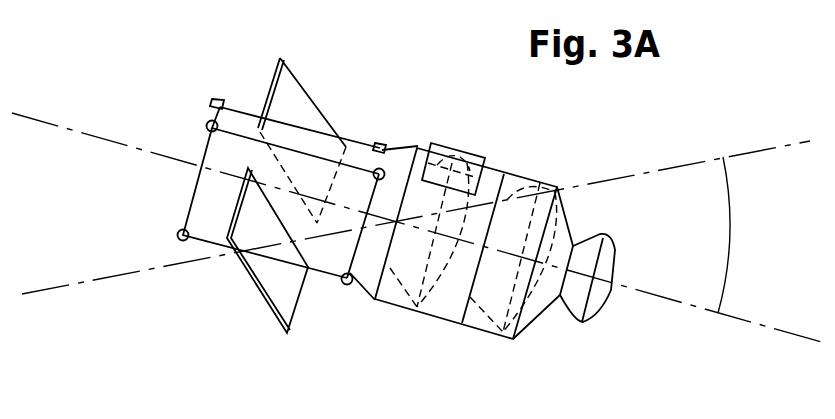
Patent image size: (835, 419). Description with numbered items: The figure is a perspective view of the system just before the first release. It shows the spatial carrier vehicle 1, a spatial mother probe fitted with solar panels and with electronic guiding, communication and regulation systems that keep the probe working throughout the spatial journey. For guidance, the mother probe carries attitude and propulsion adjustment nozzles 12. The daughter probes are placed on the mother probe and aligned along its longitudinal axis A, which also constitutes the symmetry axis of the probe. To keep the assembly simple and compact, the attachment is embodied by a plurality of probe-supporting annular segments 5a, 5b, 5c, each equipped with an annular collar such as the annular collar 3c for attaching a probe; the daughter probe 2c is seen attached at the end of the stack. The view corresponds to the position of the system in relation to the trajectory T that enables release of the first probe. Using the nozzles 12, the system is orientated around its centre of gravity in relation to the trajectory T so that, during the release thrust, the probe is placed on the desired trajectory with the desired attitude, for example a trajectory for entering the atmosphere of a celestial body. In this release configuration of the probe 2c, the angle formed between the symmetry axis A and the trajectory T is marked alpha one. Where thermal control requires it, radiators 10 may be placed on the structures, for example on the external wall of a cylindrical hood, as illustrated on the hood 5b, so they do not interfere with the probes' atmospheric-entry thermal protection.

The spatial carrier vehicle 1 is at (327, 263).
The attitude and propulsion adjustment nozzles 12 is at (217, 101).
The radiators 10 is at (473, 152).
The probe-supporting annular segment 5a is at (370, 283).
The probe-supporting annular segment 5b is at (391, 293).
The probe-supporting annular segment 5c is at (473, 320).
The annular collar 3c is at (568, 213).
The daughter probe 2c is at (605, 305).
The trajectory T is at (102, 279).
The longitudinal axis A is at (797, 337).